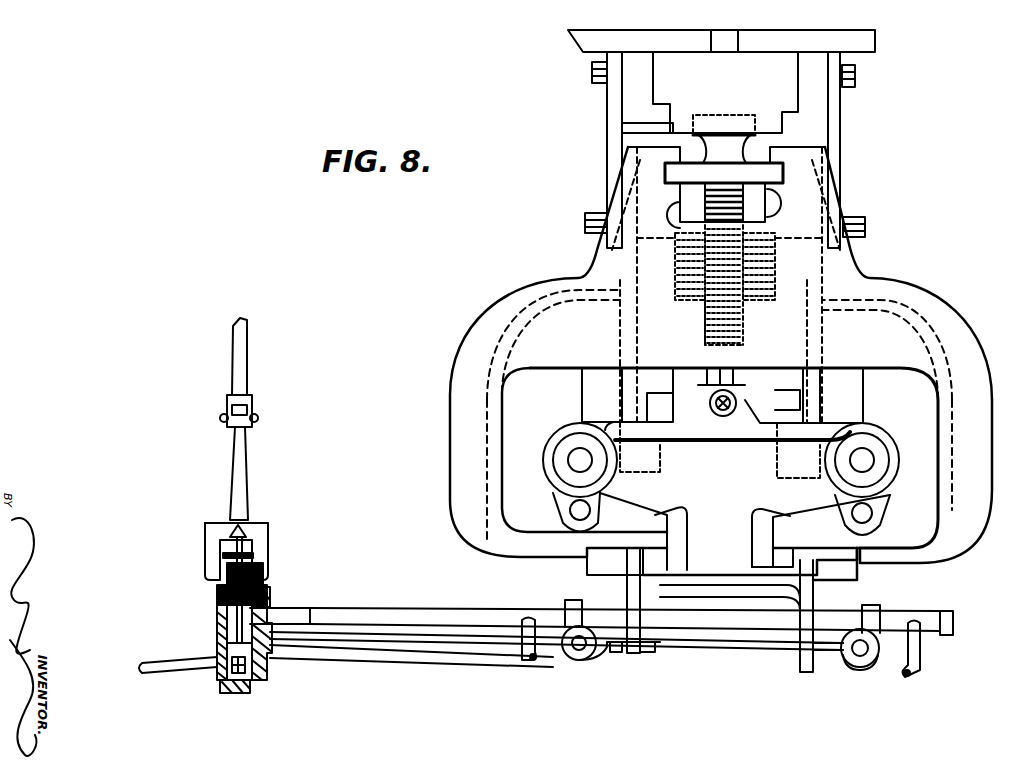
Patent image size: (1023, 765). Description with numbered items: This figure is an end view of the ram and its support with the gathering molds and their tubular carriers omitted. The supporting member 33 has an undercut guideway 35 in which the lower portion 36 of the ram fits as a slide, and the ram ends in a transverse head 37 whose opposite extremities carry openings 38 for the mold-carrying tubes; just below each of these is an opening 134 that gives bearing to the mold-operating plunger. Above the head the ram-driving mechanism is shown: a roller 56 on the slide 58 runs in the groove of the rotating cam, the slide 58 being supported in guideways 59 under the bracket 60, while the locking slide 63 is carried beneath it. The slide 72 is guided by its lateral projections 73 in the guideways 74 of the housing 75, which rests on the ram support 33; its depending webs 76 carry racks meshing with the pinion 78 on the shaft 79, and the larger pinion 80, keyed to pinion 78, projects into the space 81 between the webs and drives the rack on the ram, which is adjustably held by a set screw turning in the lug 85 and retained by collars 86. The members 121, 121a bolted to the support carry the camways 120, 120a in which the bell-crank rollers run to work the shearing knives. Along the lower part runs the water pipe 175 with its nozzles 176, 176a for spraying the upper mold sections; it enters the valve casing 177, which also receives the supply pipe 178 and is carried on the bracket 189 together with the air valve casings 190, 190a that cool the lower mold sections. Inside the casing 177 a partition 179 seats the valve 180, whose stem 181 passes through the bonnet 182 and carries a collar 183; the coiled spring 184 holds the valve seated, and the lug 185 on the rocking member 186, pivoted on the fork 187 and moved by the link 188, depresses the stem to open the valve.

The slide 58 is at (733, 65).
The bracket 60 is at (590, 47).
The guideways 59 is at (653, 104).
The locking slide 63 is at (740, 103).
The roller 56 is at (760, 114).
The slide 72 is at (724, 158).
The lateral projections 73 is at (785, 167).
The guideways 74 is at (785, 180).
The space 81 is at (737, 190).
The depending webs 76 is at (688, 210).
The housing 75 is at (900, 305).
The pinion 78 is at (770, 273).
The shaft 79 is at (672, 246).
The pinion 80 is at (702, 330).
The member 121 is at (650, 382).
The camway 120 is at (665, 413).
The member 121a is at (793, 390).
The camway 120a is at (792, 413).
The lug 85 is at (747, 382).
The collars 86 is at (707, 409).
The transverse head 37 is at (706, 483).
The openings 38 is at (874, 460).
The opening 134 is at (872, 512).
The lower portion 36 is at (782, 560).
The supporting member 33 is at (628, 563).
The undercut guideway 35 is at (647, 570).
The water pipe 175 is at (387, 615).
The bracket 189 is at (410, 657).
The valve casing 190 is at (577, 657).
The valve casing 190a is at (858, 662).
The nozzle 176 is at (525, 647).
The nozzle 176a is at (915, 660).
The link 188 is at (247, 380).
The rocking member 186 is at (240, 487).
The lug 185 is at (250, 523).
The fork 187 is at (207, 545).
The collar 183 is at (252, 555).
The coiled spring 184 is at (250, 574).
The bonnet 182 is at (217, 593).
The valve casing 177 is at (268, 597).
The stem 181 is at (236, 610).
The partition 179 is at (227, 637).
The valve 180 is at (215, 673).
The water supply pipe 178 is at (152, 664).